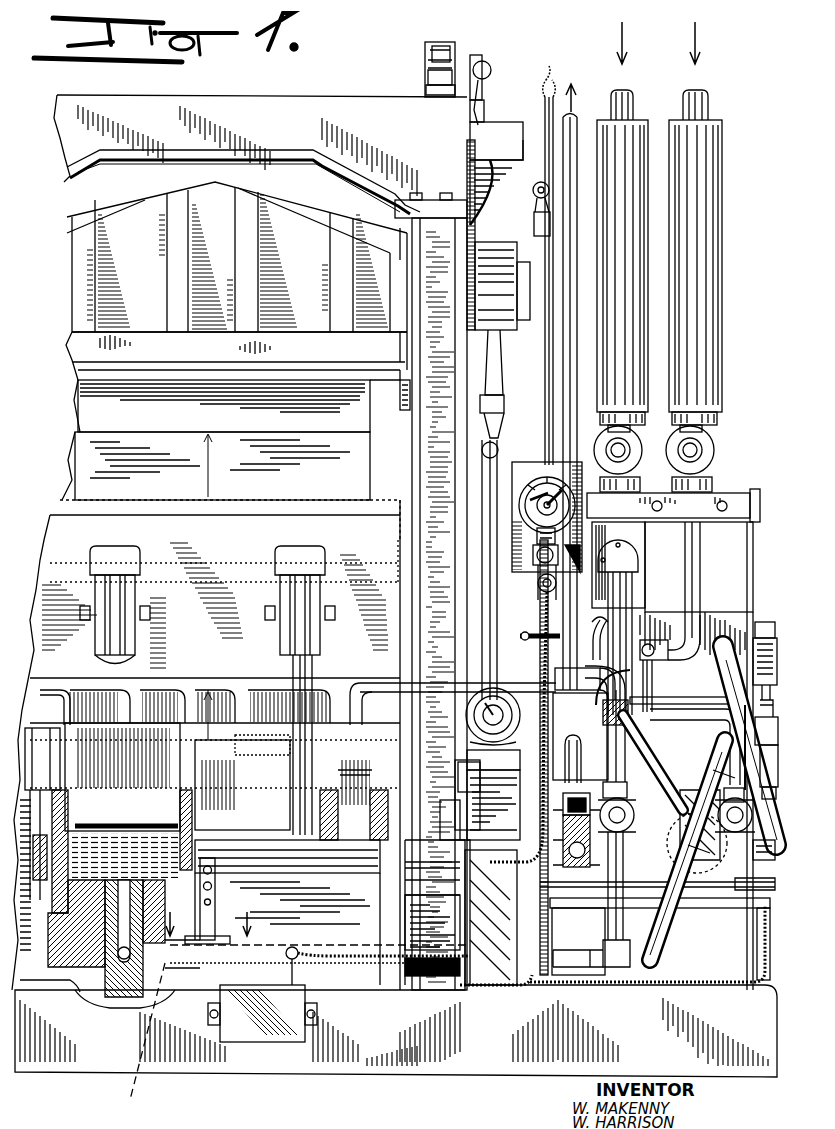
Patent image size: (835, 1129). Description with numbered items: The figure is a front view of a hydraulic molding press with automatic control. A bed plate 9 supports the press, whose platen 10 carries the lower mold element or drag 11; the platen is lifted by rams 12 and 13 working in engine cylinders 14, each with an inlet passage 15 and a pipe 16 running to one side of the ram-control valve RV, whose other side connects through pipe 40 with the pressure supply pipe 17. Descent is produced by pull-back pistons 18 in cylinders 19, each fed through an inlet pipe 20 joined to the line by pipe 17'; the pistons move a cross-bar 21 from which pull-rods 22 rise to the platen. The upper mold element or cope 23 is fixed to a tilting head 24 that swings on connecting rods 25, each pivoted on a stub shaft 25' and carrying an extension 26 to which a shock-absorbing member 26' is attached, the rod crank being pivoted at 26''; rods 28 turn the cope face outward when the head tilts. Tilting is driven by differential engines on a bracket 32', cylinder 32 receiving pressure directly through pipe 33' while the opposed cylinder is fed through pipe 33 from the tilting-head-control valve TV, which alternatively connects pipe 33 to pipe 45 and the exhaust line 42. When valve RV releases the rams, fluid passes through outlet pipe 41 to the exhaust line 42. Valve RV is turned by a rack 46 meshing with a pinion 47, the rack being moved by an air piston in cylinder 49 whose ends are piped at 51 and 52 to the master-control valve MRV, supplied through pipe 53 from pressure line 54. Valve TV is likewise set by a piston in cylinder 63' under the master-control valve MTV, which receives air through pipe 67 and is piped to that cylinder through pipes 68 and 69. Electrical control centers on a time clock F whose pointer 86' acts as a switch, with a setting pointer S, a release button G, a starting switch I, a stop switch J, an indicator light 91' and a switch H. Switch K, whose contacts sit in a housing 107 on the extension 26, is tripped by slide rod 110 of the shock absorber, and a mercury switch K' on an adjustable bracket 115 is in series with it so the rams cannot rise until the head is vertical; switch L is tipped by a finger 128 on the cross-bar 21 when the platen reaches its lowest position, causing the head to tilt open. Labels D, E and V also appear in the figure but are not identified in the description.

The bed plate 9 is at (362, 1060).
The platen 10 is at (55, 528).
The lower mold element or drag 11 is at (360, 482).
The ram 12 is at (215, 801).
The ram 13 is at (291, 765).
The engine cylinders 14 is at (70, 930).
The inlet passages 15 is at (106, 955).
The pipe 16 is at (292, 950).
The pressure supply pipe 17 is at (674, 368).
The pipe 17' is at (565, 661).
The pull-back pistons 18 is at (462, 800).
The cylinders 19 is at (35, 740).
The inlet pipe 20 is at (58, 690).
The cross-bar 21 is at (365, 890).
The pull-rods 22 is at (132, 640).
The upper mold element or cope 23 is at (80, 412).
The tilting head 24 is at (75, 346).
The connecting rods 25 is at (433, 591).
The stub shaft 25' is at (460, 873).
The extension 26 is at (247, 213).
The shock-absorbing member 26' is at (393, 405).
The pivotal connection 26'' is at (448, 765).
The rods 28 is at (484, 462).
The cylinder 32 is at (493, 764).
The bracket 32' is at (480, 934).
The pipe 33 is at (608, 850).
The pipe 33' is at (507, 757).
The pipe 40 is at (662, 800).
The outlet pipe 41 is at (612, 750).
The exhaust line 42 is at (566, 370).
The pipe 45 is at (695, 791).
The rack 46 is at (556, 858).
The pinion 47 is at (560, 838).
The cylinder 49 is at (657, 931).
The pipe 51 is at (580, 738).
The pipe 52 is at (772, 742).
The pipe 53 is at (682, 688).
The fluid pressure line 54 is at (716, 337).
The cylinder 63' is at (778, 864).
The pipe 67 is at (700, 586).
The pipe 68 is at (770, 832).
The pipe 69 is at (662, 726).
The pointer 86' is at (500, 489).
The indicator light 91' is at (527, 265).
The housing 107 is at (436, 46).
The slide rod 110 is at (425, 72).
The adjustable bracket 115 is at (485, 96).
The tipping finger 128 is at (353, 965).
The valve D is at (768, 778).
The valve E is at (762, 642).
The time clock F is at (534, 480).
The release button G is at (536, 532).
The switch H is at (432, 922).
The starting switch or push button I is at (536, 553).
The stop switch or push button J is at (523, 593).
The switch K is at (441, 33).
The mercury switch K' is at (480, 65).
The switch mechanism L is at (275, 1035).
The setting pointer S is at (584, 499).
The bracket V is at (215, 901).
The master-control-valve MTV is at (740, 622).
The master-control-valve MRV is at (748, 713).
The ram-control-valve RV is at (617, 807).
The tilting-head-control valve TV is at (735, 810).